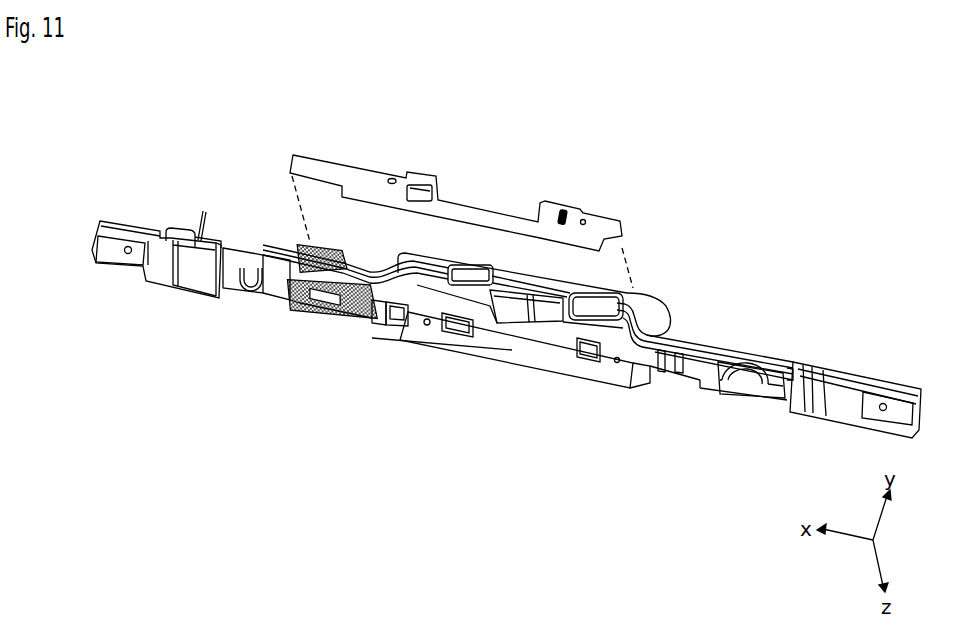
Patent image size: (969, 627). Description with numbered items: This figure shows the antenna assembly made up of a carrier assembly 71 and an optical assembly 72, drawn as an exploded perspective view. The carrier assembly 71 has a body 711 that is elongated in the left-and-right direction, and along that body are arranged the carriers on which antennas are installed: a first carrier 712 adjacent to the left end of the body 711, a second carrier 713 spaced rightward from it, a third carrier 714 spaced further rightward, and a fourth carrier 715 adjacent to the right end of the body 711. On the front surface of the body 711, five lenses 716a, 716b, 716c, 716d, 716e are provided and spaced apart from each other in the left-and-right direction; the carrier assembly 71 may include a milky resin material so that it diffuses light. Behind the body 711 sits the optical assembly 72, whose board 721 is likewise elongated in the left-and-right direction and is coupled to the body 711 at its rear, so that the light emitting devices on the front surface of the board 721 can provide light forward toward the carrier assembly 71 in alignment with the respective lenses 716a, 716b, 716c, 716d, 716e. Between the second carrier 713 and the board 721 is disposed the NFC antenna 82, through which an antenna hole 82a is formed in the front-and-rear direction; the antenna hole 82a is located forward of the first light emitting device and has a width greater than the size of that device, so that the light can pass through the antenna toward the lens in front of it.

The carrier assembly 71 is at (898, 362).
The body 711 is at (538, 370).
The first carrier 712 is at (195, 273).
The second carrier 713 is at (382, 320).
The third carrier 714 is at (713, 401).
The fourth carrier 715 is at (835, 406).
The lens 716a is at (318, 318).
The lens 716b is at (403, 328).
The lens 716c is at (458, 334).
The lens 716d is at (587, 362).
The lens 716e is at (648, 384).
The optical assembly 72 is at (469, 208).
The board 721 is at (575, 212).
The NFC antenna 82 is at (297, 312).
The antenna hole 82a is at (352, 320).